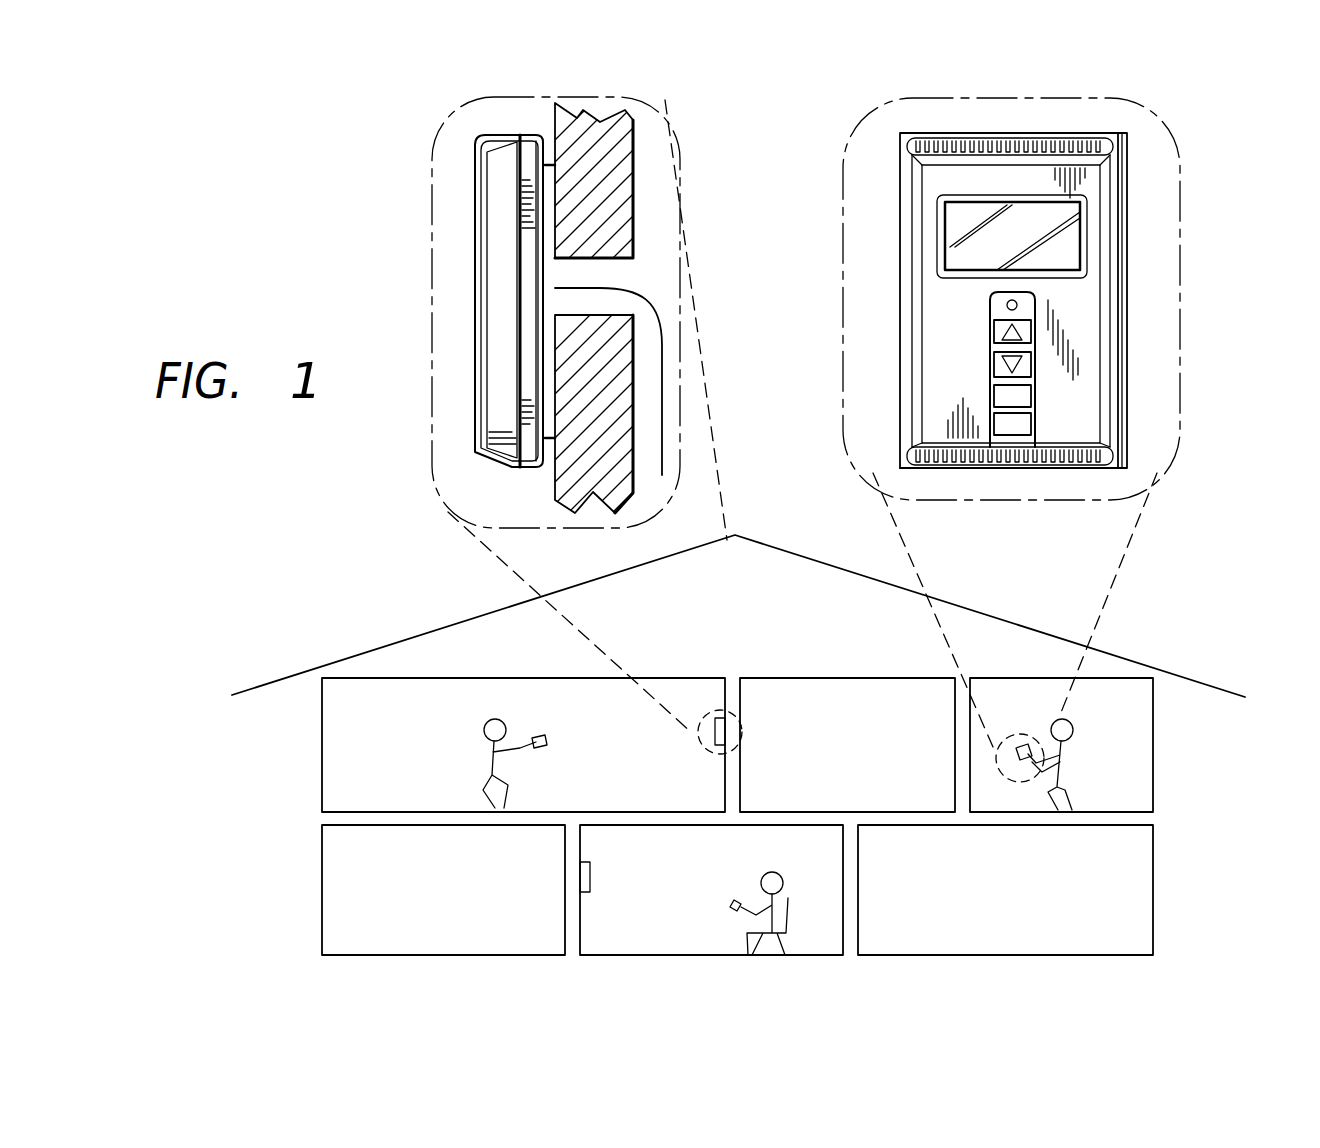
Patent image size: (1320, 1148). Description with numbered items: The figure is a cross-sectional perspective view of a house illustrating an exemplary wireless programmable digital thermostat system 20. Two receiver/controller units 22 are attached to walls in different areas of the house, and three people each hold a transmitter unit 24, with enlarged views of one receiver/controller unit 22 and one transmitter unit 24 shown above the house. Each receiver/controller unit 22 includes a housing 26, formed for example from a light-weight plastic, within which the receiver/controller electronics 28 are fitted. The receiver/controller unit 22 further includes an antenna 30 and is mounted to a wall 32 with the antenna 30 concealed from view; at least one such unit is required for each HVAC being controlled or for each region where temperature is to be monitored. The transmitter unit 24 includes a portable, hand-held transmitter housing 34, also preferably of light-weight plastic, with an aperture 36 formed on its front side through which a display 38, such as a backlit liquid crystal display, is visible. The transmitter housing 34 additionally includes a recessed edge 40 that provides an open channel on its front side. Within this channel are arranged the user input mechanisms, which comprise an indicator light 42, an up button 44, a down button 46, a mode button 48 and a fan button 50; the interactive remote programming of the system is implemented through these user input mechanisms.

The wireless programmable digital thermostat system 20 is at (1221, 568).
The receiver/controller unit 22 is at (458, 102).
The transmitter unit 24 is at (1133, 105).
The housing 26 is at (470, 245).
The receiver/controller electronics 28 is at (503, 168).
The antenna 30 is at (663, 455).
The wall 32 is at (553, 120).
The transmitter housing 34 is at (947, 167).
The aperture 36 is at (957, 213).
The display 38 is at (1067, 248).
The recessed edge 40 is at (1032, 308).
The indicator light 42 is at (1005, 305).
The up button 44 is at (992, 330).
The down button 46 is at (992, 365).
The mode button 48 is at (1027, 397).
The fan button 50 is at (993, 422).